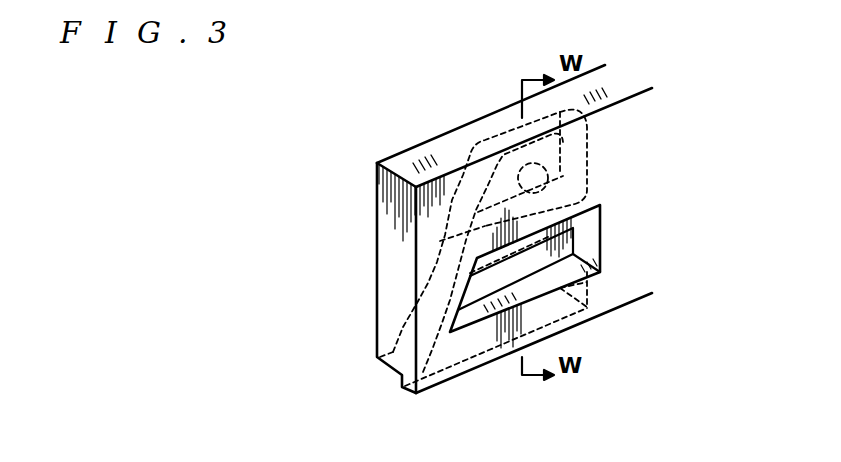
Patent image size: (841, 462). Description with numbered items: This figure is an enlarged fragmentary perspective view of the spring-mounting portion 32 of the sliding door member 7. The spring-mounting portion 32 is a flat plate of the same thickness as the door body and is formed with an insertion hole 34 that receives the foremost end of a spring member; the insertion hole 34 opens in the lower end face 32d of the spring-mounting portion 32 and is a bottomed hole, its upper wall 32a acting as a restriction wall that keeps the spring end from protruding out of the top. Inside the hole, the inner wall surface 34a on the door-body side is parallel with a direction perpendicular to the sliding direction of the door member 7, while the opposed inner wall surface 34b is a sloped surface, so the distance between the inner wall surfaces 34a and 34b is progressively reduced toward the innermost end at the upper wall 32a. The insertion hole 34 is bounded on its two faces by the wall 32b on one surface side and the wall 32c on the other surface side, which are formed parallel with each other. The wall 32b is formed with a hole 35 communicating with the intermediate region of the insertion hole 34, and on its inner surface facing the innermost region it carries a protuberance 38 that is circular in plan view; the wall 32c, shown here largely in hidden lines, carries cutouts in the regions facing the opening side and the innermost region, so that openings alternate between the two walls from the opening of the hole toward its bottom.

The door member 7 is at (423, 109).
The spring-mounting portion 32 is at (400, 162).
The upper wall 32a is at (503, 124).
The wall on one-surface side 32b is at (492, 361).
The wall on other-surface side 32c is at (435, 251).
The lower end face 32d is at (421, 392).
The insertion hole 34 is at (447, 360).
The inner wall surface 34a is at (598, 245).
The inner wall surface 34b is at (442, 277).
The hole 35 is at (519, 282).
The protuberance 38 is at (560, 175).